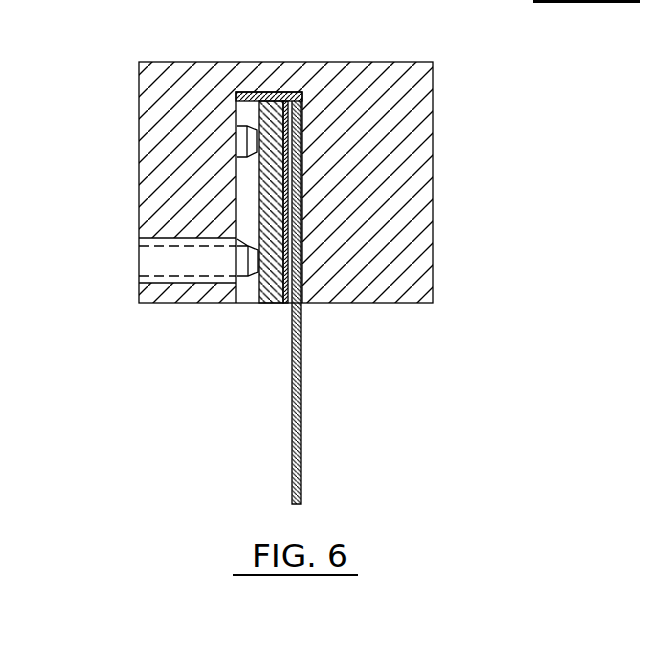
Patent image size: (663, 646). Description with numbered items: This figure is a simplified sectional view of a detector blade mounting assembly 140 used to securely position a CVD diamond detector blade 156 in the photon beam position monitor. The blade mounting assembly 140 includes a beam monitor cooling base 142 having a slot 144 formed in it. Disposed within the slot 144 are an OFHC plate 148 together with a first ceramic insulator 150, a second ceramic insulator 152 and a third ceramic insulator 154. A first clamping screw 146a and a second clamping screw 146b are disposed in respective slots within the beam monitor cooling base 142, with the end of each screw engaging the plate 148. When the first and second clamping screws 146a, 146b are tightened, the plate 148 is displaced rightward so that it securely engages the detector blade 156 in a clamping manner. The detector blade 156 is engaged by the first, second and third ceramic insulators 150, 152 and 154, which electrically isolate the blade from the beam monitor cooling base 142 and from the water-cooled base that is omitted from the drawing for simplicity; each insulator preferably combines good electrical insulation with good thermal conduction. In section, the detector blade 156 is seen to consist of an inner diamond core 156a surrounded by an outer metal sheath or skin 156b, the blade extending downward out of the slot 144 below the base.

The detector blade mounting assembly 140 is at (292, 252).
The beam monitor cooling base 142 is at (431, 170).
The slot 144 is at (250, 303).
The first clamping screw 146a is at (241, 125).
The second clamping screw 146b is at (155, 258).
The OFHC plate 148 is at (236, 95).
The first ceramic insulator 150 is at (272, 94).
The second ceramic insulator 152 is at (287, 303).
The third ceramic insulator 154 is at (302, 304).
The detector blade 156 is at (312, 414).
The inner diamond core 156a is at (300, 483).
The outer metal sheath 156b is at (292, 438).